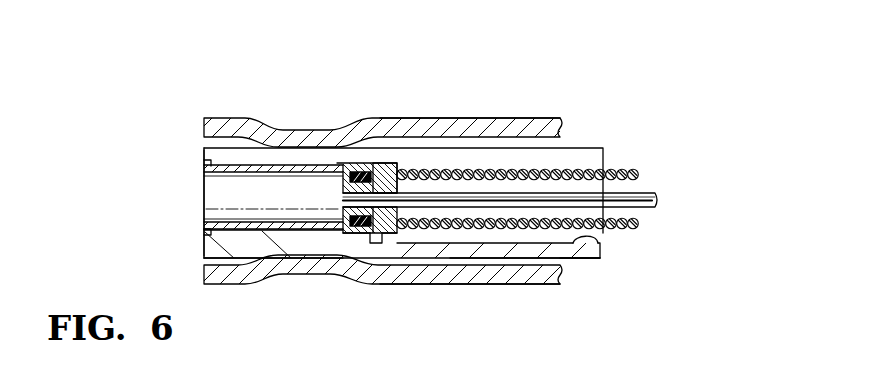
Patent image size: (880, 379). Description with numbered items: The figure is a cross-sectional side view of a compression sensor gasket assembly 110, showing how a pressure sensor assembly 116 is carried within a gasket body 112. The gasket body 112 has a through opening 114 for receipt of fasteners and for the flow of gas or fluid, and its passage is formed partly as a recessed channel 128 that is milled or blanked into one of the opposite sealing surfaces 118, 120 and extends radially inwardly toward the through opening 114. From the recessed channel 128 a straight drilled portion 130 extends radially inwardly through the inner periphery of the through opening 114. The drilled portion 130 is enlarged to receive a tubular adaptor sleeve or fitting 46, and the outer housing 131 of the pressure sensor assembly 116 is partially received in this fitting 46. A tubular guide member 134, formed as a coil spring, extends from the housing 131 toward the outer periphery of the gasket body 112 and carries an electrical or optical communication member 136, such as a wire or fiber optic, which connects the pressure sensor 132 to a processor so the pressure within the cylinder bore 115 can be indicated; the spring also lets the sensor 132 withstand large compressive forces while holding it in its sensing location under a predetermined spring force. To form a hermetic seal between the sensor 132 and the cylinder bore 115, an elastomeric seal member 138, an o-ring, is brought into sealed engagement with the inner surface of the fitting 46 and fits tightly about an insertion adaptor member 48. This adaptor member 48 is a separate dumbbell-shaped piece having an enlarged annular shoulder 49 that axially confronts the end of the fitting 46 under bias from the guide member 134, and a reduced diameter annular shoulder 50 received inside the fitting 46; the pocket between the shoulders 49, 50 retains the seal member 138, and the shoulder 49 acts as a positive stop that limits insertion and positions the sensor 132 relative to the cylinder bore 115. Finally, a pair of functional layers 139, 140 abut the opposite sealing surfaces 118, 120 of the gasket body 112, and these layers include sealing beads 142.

The compression sensor gasket assembly 110 is at (457, 210).
The gasket body 112 is at (593, 260).
The through opening 114 is at (200, 248).
The cylinder bore 115 is at (160, 214).
The pressure sensor assembly 116 is at (567, 148).
The sealing surface 118 is at (352, 164).
The sealing surface 120 is at (568, 260).
The recessed channel 128 is at (600, 243).
The drilled portion 130 is at (252, 184).
The outer housing 131 is at (277, 178).
The pressure sensor 132 is at (201, 190).
The tubular guide member 134 is at (632, 171).
The communication member 136 is at (645, 195).
The elastomeric seal member 138 is at (360, 172).
The functional layer 139 is at (497, 119).
The functional layer 140 is at (497, 286).
The sealing bead 142 is at (312, 128).
The tubular adaptor sleeve or fitting 46 is at (201, 229).
The insertion adaptor member 48 is at (385, 164).
The enlarged annular shoulder 49 is at (380, 259).
The reduced diameter annular shoulder 50 is at (348, 260).